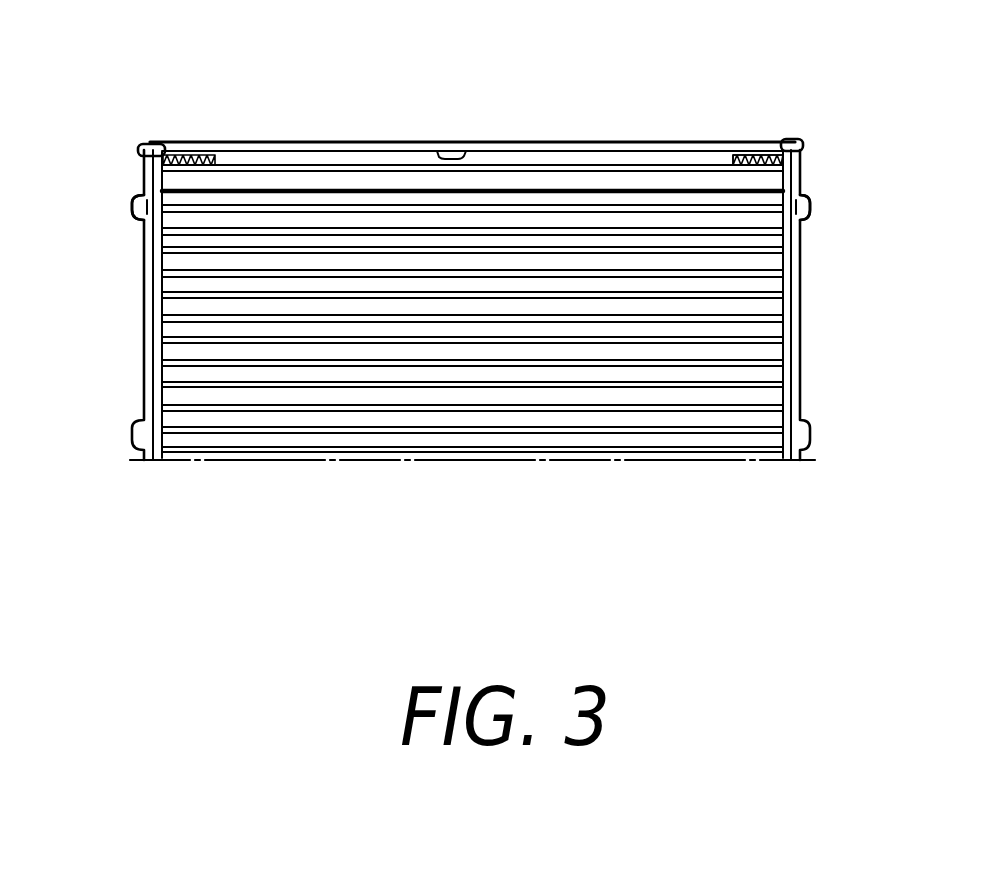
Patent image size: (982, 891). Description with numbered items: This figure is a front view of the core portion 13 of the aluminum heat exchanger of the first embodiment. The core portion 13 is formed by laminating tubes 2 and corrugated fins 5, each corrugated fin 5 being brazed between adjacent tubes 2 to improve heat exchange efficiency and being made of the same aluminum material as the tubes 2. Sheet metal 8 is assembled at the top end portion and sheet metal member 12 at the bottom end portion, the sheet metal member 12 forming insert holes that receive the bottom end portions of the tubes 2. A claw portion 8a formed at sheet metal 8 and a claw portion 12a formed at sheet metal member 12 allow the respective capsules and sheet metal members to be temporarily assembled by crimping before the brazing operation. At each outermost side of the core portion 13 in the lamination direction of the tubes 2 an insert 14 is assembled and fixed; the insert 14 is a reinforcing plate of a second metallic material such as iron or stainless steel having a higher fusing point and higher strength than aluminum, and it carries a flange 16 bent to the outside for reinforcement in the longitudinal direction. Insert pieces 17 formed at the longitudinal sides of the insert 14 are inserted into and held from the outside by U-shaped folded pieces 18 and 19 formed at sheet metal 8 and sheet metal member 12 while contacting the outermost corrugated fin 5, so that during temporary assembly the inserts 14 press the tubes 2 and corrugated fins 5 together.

The tube 2 is at (472, 428).
The corrugated fin 5 is at (738, 140).
The sheet metal 8 is at (146, 364).
The claw portion 8a is at (136, 204).
The sheet metal member 12 is at (796, 296).
The claw portion 12a is at (806, 202).
The core portion 13 is at (120, 153).
The insert 14 is at (446, 150).
The flange 16 is at (520, 141).
The insert piece 17 is at (161, 142).
The U-shaped folded piece 18 is at (137, 145).
The U-shaped folded piece 19 is at (800, 139).